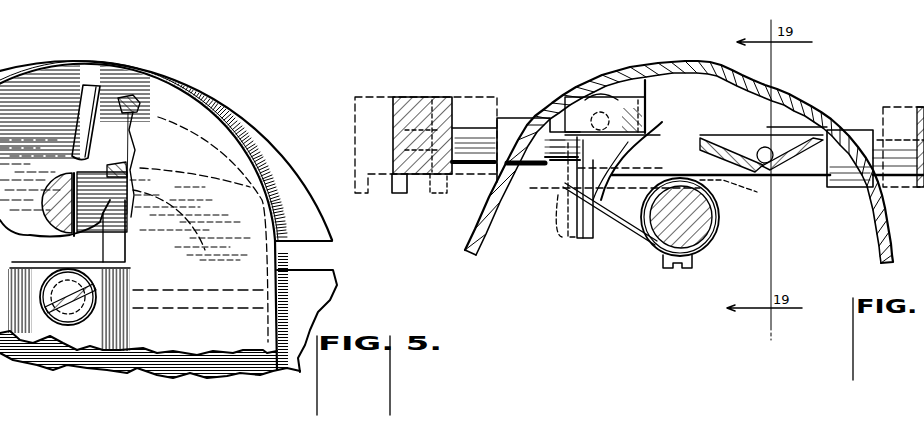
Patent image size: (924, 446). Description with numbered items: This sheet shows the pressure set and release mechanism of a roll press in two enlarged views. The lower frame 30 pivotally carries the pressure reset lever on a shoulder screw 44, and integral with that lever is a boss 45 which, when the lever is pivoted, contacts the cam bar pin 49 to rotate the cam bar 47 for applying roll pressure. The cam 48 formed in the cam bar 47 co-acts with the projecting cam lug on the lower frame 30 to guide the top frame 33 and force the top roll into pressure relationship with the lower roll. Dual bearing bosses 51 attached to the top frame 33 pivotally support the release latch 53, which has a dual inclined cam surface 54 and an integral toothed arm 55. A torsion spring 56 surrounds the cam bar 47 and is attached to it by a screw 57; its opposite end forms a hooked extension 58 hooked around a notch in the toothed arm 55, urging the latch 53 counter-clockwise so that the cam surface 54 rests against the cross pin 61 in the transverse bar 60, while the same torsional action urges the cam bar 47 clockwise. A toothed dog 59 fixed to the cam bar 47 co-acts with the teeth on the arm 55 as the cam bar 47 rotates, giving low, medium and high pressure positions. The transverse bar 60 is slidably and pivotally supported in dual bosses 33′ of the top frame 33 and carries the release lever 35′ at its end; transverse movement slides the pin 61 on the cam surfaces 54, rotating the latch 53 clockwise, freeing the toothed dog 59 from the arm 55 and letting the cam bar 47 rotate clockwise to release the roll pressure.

In FIG. 5, the lower frame 30 is at (338, 273).
In FIG. 5, the top frame 33 is at (250, 129).
In FIG. 6, the top frame 33 is at (804, 92).
In FIG. 6, the dual bosses 33′ is at (510, 118).
In FIG. 6, the pressure release lever 35′ is at (408, 97).
In FIG. 5, the shoulder screw 44 is at (97, 310).
In FIG. 5, the boss 45 is at (142, 141).
In FIG. 6, the cam bar 47 is at (699, 240).
In FIG. 5, the cam 48 is at (73, 199).
In FIG. 5, the cam bar pin 49 is at (92, 86).
In FIG. 6, the bearing boss 51 is at (647, 97).
In FIG. 6, the release latch 53 is at (645, 140).
In FIG. 6, the dual inclined cam surface 54 is at (719, 143).
In FIG. 6, the toothed arm 55 is at (577, 236).
In FIG. 6, the torsion spring 56 is at (716, 223).
In FIG. 6, the screw 57 is at (680, 270).
In FIG. 6, the hooked extension 58 is at (612, 212).
In FIG. 6, the toothed dog 59 is at (686, 172).
In FIG. 6, the transverse bar 60 is at (473, 167).
In FIG. 6, the cross pin 61 is at (769, 176).